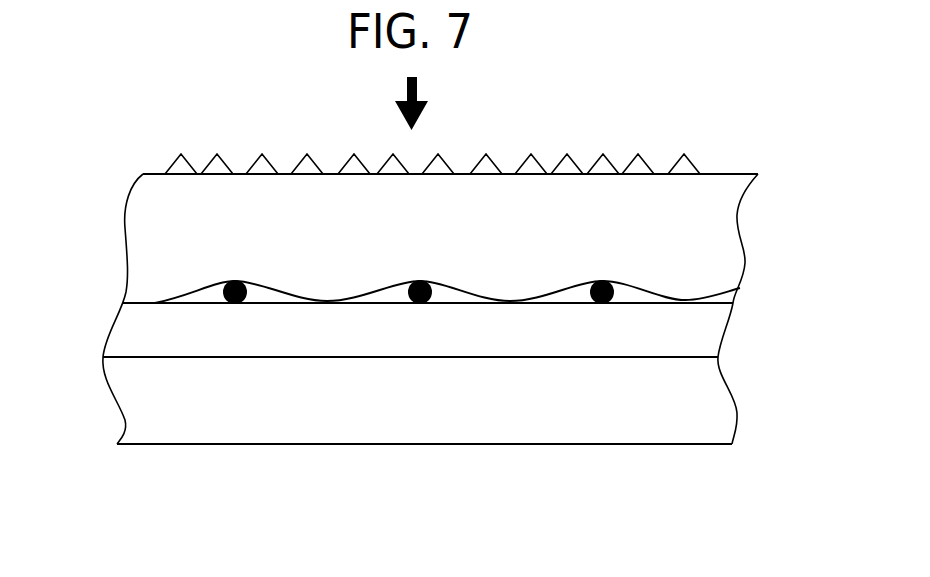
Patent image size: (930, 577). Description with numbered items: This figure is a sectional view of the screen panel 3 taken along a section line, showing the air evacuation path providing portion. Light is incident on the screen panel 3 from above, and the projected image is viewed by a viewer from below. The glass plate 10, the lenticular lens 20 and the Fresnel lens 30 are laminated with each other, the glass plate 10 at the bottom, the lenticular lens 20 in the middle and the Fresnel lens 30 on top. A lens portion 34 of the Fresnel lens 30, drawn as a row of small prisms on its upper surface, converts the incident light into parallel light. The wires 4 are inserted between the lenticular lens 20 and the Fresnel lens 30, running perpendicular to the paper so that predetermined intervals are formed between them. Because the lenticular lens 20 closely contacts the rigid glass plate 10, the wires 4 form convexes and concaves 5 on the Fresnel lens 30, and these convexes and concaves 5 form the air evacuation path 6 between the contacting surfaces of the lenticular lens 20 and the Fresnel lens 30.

The screen panel 3 is at (430, 328).
The wires 4 is at (222, 288).
The convexes and concaves 5 is at (660, 292).
The air evacuation path 6 is at (627, 292).
The glass plate 10 is at (547, 512).
The lenticular lens 20 is at (402, 332).
The Fresnel lens 30 is at (430, 302).
The lens portion 34 is at (533, 168).